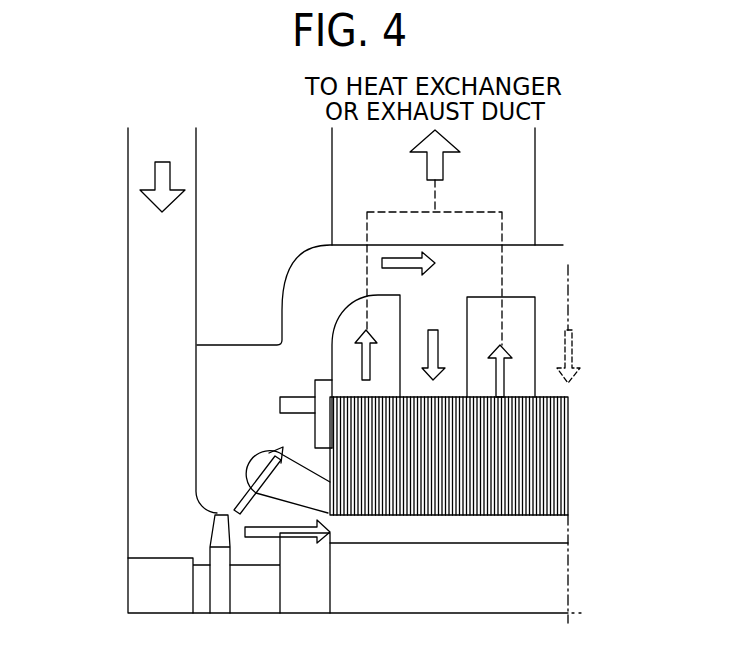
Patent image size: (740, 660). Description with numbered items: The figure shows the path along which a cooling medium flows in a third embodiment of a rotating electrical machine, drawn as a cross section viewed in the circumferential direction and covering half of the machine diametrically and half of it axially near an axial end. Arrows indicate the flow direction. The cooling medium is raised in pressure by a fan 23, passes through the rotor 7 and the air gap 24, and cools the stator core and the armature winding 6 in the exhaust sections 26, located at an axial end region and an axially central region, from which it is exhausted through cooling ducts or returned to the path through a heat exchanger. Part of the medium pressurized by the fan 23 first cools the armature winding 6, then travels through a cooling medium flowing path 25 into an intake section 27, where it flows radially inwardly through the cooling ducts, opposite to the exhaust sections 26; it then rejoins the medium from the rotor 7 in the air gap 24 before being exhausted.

The armature winding 6 is at (330, 482).
The rotor 7 is at (330, 578).
The fan 23 is at (212, 530).
The air gap 24 is at (503, 533).
The cooling medium flowing path 25 is at (468, 263).
The exhaust sections 26 is at (360, 395).
The intake section 27 is at (440, 362).